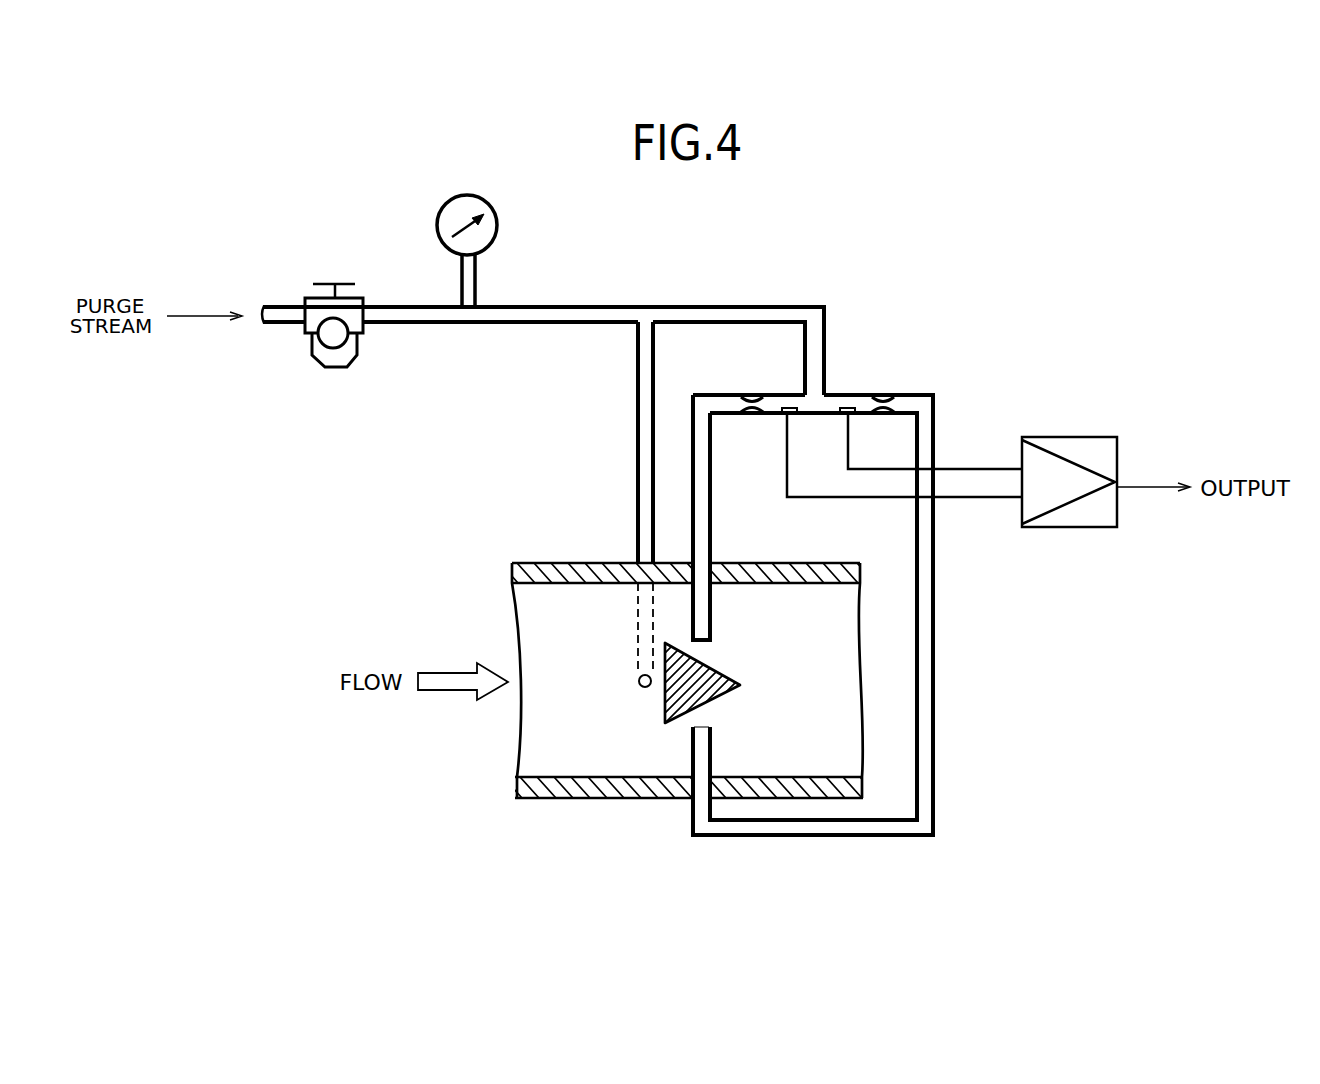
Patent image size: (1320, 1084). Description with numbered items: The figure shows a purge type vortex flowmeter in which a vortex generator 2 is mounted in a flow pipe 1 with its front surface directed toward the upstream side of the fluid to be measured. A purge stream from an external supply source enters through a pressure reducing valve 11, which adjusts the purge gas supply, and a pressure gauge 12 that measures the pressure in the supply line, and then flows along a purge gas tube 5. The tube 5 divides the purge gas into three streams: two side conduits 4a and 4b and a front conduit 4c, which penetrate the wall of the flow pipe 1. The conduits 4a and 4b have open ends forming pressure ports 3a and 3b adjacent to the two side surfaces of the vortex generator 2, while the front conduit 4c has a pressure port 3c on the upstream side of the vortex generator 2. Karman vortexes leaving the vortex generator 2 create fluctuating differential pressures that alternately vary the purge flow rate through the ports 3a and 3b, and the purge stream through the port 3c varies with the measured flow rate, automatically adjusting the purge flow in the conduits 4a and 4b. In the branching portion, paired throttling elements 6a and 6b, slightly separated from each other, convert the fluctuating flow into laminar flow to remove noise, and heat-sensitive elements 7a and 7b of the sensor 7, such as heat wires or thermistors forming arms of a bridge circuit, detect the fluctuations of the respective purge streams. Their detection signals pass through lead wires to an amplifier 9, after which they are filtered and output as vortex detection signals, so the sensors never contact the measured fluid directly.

The flow pipe 1 is at (613, 799).
The vortex generator 2 is at (665, 722).
The pressure port 3a is at (712, 642).
The pressure port 3b is at (705, 725).
The pressure port 3c is at (641, 688).
The conduit 4a is at (712, 515).
The conduit 4b is at (843, 836).
The front conduit 4c is at (638, 487).
The purge gas tube 5 is at (591, 310).
The throttling element 6a is at (750, 393).
The throttling element 6b is at (884, 394).
The sensor 7 is at (792, 459).
The heat-sensitive element 7a is at (792, 413).
The heat-sensitive element 7b is at (844, 413).
The amplifier 9 is at (1074, 437).
The valve 11 is at (318, 367).
The pressure gauge 12 is at (495, 228).